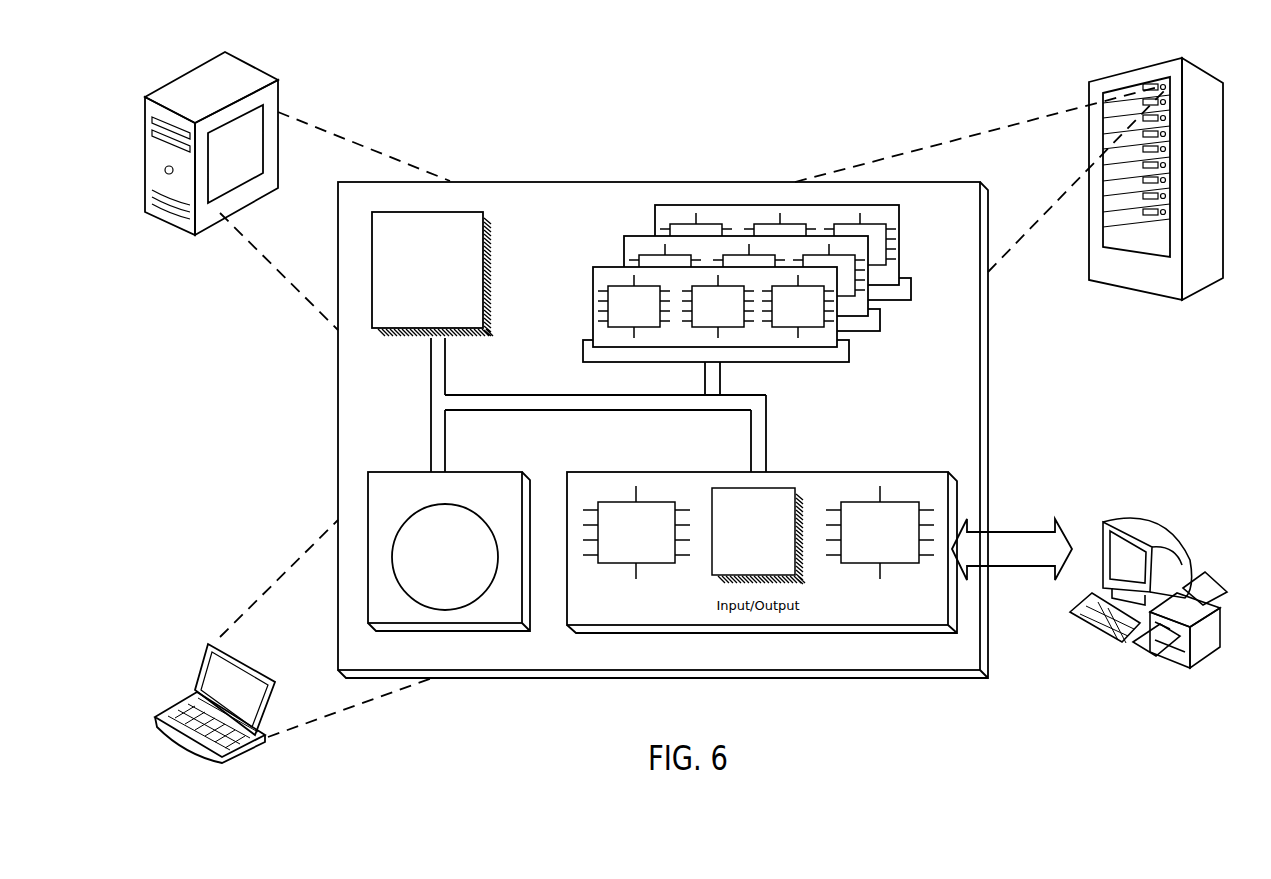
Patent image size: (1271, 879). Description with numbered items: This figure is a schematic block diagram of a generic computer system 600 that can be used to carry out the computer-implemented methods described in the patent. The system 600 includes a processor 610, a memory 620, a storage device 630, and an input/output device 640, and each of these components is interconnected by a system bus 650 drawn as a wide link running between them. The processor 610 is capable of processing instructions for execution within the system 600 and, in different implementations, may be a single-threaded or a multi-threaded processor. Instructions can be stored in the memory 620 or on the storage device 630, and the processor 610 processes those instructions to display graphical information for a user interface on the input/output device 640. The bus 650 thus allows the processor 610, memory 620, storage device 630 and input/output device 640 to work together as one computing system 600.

The computer system 600 is at (502, 70).
The processor 610 is at (432, 274).
The memory 620 is at (908, 334).
The storage device 630 is at (449, 551).
The input/output device 640 is at (1102, 527).
The system bus 650 is at (597, 412).